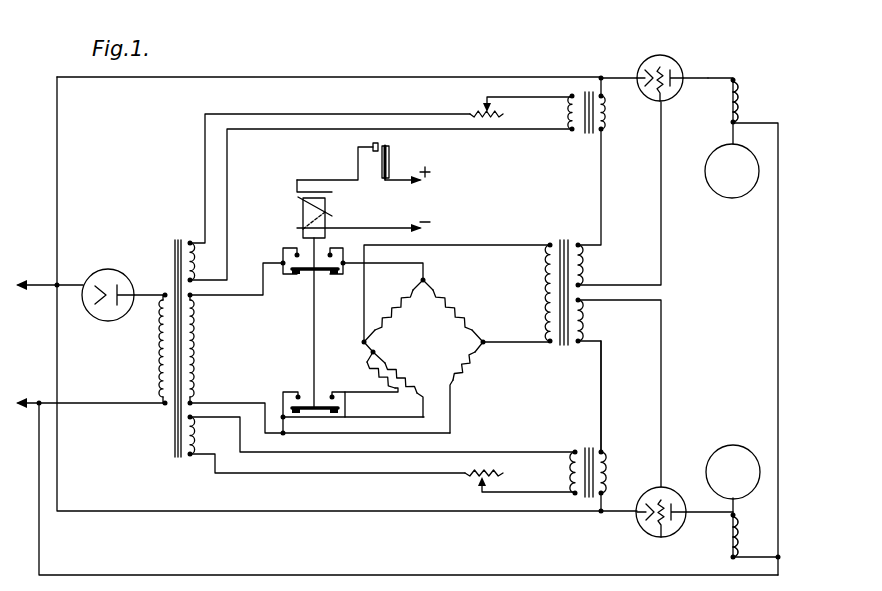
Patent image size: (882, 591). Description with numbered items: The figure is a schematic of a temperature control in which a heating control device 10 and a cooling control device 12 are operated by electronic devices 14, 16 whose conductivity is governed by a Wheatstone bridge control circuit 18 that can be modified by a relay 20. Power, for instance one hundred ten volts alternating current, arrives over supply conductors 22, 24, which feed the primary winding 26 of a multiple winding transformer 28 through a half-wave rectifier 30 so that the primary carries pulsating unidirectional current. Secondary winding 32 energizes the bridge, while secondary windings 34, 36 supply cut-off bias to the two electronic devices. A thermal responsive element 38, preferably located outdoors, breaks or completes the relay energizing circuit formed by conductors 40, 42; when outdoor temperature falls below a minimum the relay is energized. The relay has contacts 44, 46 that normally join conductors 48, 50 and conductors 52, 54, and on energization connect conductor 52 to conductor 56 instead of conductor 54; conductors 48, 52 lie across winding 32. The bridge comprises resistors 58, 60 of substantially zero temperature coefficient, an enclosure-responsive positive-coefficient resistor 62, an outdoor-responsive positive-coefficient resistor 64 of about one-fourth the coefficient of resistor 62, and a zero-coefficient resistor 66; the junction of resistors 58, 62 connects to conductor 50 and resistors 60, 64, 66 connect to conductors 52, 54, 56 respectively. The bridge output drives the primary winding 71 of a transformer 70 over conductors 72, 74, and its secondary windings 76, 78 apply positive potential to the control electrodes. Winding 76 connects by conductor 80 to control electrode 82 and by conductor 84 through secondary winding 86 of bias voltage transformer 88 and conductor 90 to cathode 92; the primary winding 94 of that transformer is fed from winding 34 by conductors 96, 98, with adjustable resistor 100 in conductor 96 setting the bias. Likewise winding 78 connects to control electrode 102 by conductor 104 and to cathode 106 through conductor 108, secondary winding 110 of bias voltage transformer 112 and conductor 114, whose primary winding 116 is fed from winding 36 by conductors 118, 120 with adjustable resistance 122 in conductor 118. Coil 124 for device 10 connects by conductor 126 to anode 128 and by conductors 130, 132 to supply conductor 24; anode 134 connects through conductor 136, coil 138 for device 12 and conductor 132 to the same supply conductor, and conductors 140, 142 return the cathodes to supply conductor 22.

The control device 10 is at (705, 174).
The control device 12 is at (707, 468).
The electronic device 14 is at (671, 58).
The electronic device 16 is at (667, 538).
The Wheatstone bridge control circuit 18 is at (453, 311).
The relay 20 is at (298, 206).
The supply conductor 22 is at (32, 288).
The supply conductor 24 is at (27, 400).
The primary winding 26 is at (160, 345).
The multiple winding transformer 28 is at (168, 334).
The rectifier tube 30 is at (107, 268).
The secondary winding 32 is at (196, 337).
The secondary winding 34 is at (197, 262).
The secondary winding 36 is at (197, 436).
The thermal responsive element 38 is at (391, 168).
The conductor 40 is at (398, 184).
The conductor 42 is at (400, 227).
The contact 44 is at (308, 278).
The contact 46 is at (312, 392).
The conductor 48 is at (264, 300).
The conductor 50 is at (345, 273).
The conductor 52 is at (252, 402).
The conductor 54 is at (368, 418).
The conductor 56 is at (374, 370).
The resistor 58 is at (472, 322).
The resistor 60 is at (462, 366).
The resistor 62 is at (382, 320).
The resistor 64 is at (400, 372).
The resistor 66 is at (362, 350).
The transformer 70 is at (561, 282).
The primary winding 71 is at (547, 278).
The conductor 72 is at (492, 240).
The conductor 74 is at (530, 344).
The secondary winding 76 is at (586, 263).
The secondary winding 78 is at (586, 317).
The conductor 80 is at (661, 192).
The control electrode 82 is at (673, 88).
The conductor 84 is at (604, 176).
The secondary winding 86 is at (607, 118).
The bias voltage transformer 88 is at (573, 132).
The conductor 90 is at (604, 76).
The cathode 92 is at (643, 66).
The primary winding 94 is at (566, 114).
The conductor 96 is at (318, 113).
The conductor 98 is at (392, 128).
The adjustable resistor 100 is at (487, 118).
The control electrode 102 is at (643, 528).
The conductor 104 is at (661, 408).
The cathode 106 is at (630, 518).
The conductor 108 is at (610, 490).
The secondary winding 110 is at (608, 462).
The bias voltage transformer 112 is at (589, 448).
The conductor 114 is at (604, 384).
The primary winding 116 is at (575, 472).
The conductor 118 is at (403, 474).
The conductor 120 is at (357, 453).
The adjustable resistance 122 is at (476, 489).
The coil 124 is at (741, 101).
The conductor 126 is at (710, 78).
The anode 128 is at (700, 68).
The conductor 130 is at (778, 310).
The conductor 132 is at (490, 556).
The anode 134 is at (690, 490).
The conductor 136 is at (706, 520).
The coil 138 is at (740, 534).
The conductor 140 is at (352, 77).
The conductor 142 is at (343, 512).